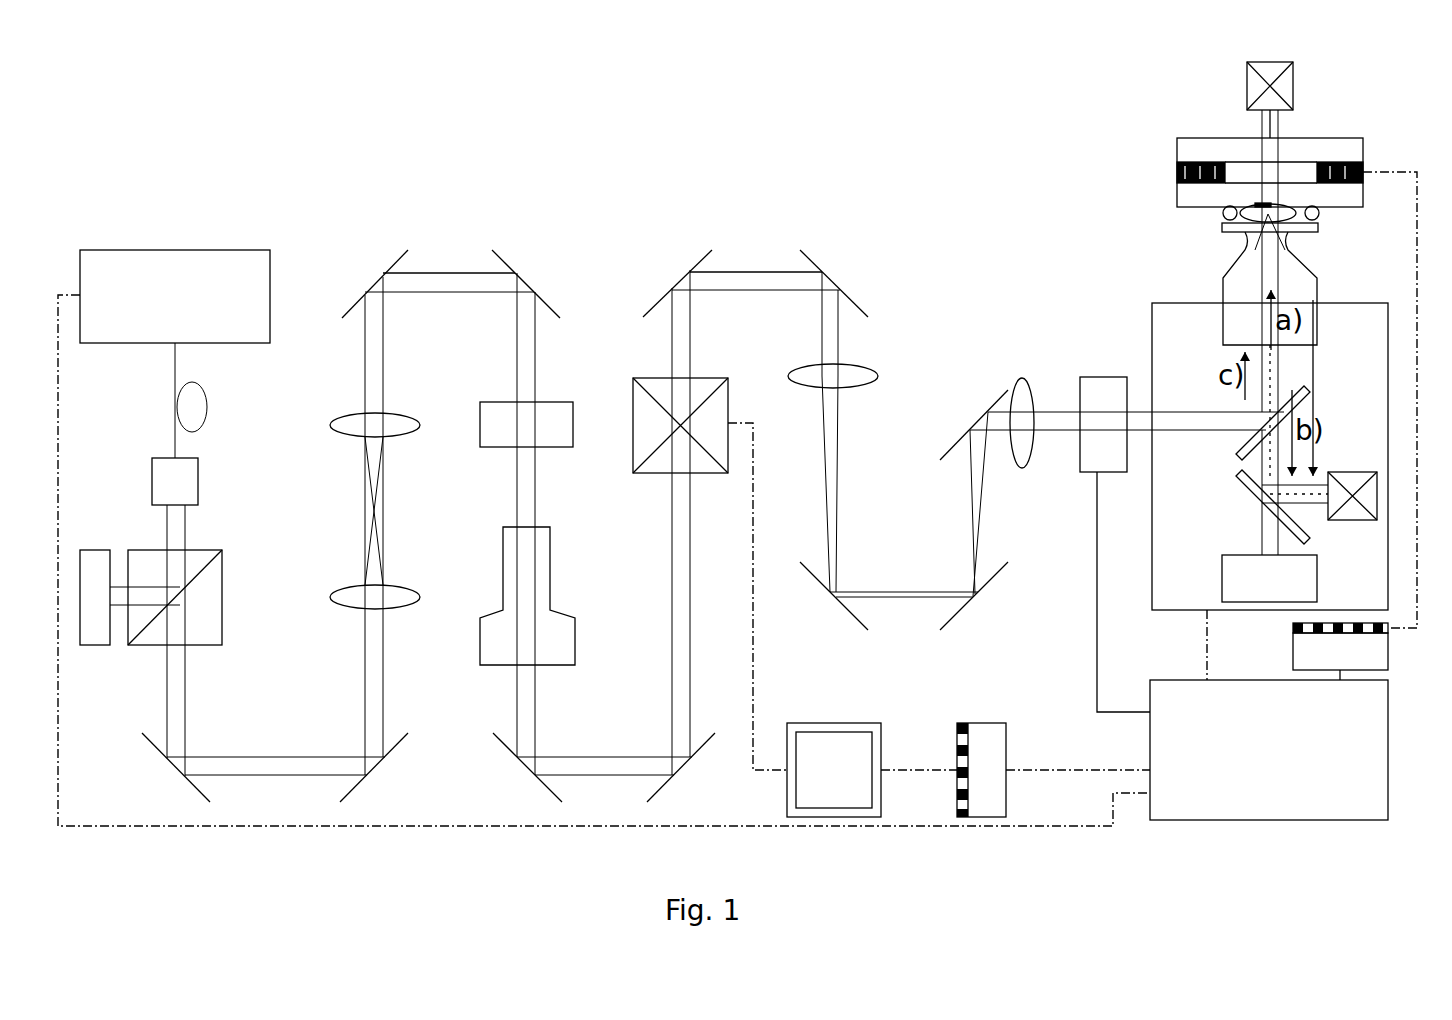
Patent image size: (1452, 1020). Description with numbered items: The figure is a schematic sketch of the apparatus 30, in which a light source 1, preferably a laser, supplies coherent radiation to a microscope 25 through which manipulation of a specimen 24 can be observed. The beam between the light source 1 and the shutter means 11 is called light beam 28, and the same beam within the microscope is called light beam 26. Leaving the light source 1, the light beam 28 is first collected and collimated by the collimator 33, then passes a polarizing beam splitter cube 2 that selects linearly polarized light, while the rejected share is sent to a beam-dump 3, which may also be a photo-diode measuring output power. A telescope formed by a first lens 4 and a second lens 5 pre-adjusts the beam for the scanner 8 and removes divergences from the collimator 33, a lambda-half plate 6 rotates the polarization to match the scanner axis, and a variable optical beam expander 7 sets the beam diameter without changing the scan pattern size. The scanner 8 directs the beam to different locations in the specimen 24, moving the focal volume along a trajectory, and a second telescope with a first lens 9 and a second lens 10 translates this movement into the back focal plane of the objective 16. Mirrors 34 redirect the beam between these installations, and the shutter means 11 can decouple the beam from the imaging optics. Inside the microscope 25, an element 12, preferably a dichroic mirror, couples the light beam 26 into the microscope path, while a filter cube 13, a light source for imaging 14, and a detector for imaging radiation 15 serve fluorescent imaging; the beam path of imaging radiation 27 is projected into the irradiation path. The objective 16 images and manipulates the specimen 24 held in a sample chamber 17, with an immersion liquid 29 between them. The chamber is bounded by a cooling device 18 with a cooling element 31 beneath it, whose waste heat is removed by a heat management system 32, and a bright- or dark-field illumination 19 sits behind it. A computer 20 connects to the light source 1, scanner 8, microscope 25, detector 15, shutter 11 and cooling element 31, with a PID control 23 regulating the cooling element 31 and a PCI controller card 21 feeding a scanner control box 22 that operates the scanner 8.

The light source 1 is at (174, 281).
The polarizing beam splitter cube 2 is at (174, 582).
The beam-dump 3 is at (94, 582).
The first lens 4 is at (364, 598).
The second lens 5 is at (364, 426).
The lambda-half plate 6 is at (515, 424).
The variable optical beam expander 7 is at (516, 596).
The scanner 8 is at (670, 425).
The first lens 9 is at (821, 378).
The second lens 10 is at (1021, 407).
The shutter means 11 is at (1102, 409).
The element 12 is at (1278, 408).
The filter cube 13 is at (1254, 505).
The light source for imaging 14 is at (1351, 480).
The detector for imaging radiation 15 is at (1268, 562).
The objective 16 is at (1250, 288).
The sample chamber 17 is at (1251, 221).
The cooling device 18 is at (1160, 212).
The bright- or dark-field illumination 19 is at (1269, 70).
The computer 20 is at (1266, 734).
The PCI controller card 21 is at (979, 754).
The scanner control box 22 is at (832, 754).
The PID control 23 is at (1319, 643).
The specimen 24 is at (1262, 204).
The microscope 25 is at (1152, 572).
The light beam 26 is at (1250, 398).
The beam path of imaging radiation 27 is at (1342, 369).
The light beam 28 is at (457, 255).
The immersion liquid 29 is at (1245, 243).
The apparatus 30 is at (838, 205).
The cooling element 31 is at (1170, 166).
The heat management system 32 is at (1318, 145).
The collimator 33 is at (172, 482).
The mirrors 34 is at (362, 282).